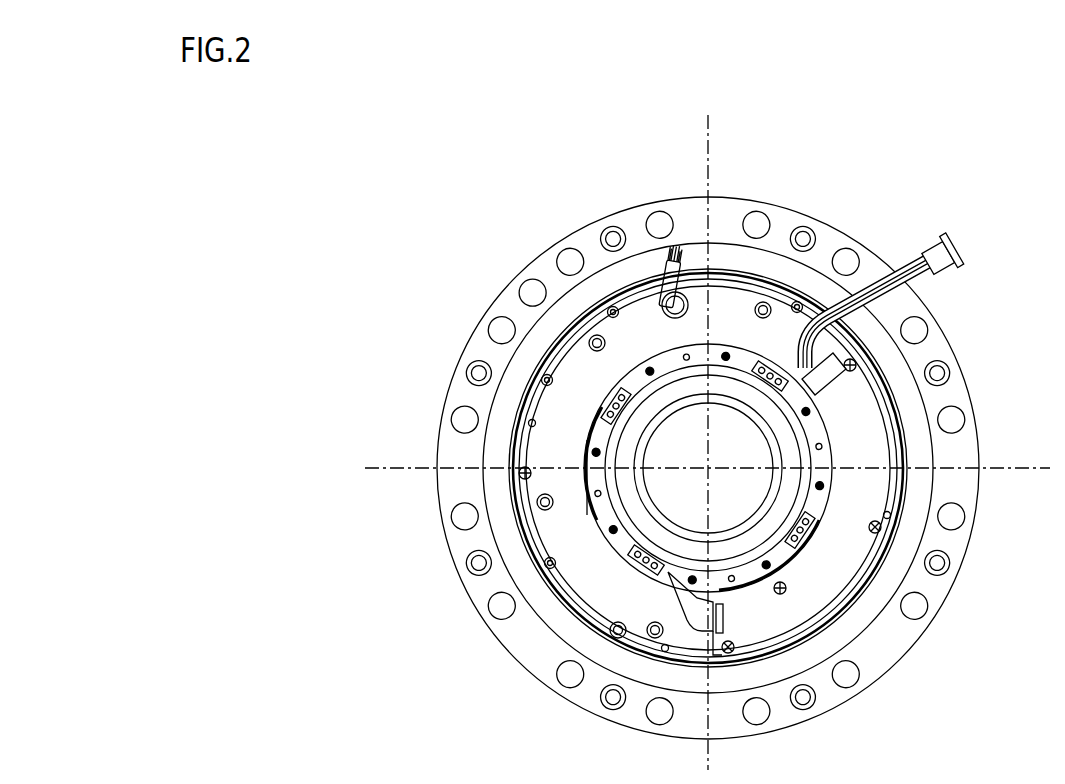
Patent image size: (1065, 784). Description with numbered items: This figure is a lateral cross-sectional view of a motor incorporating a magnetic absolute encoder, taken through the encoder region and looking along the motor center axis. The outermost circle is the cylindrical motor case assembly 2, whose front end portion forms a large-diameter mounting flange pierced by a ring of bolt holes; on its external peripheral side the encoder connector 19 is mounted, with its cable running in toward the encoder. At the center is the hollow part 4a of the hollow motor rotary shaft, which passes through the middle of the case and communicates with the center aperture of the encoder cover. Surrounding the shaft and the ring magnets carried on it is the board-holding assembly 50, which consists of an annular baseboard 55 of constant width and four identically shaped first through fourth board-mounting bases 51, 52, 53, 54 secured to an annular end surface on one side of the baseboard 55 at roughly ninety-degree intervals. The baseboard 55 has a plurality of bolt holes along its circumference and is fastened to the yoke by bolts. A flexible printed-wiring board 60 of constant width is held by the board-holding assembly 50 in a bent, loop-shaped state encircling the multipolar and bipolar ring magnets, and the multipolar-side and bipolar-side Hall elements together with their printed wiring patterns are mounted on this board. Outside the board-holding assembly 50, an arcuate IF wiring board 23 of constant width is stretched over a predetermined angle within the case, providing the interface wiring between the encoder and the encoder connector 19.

The motor case assembly 2 is at (437, 381).
The hollow part 4a is at (708, 468).
The encoder connector 19 is at (960, 242).
The IF wiring board 23 is at (870, 460).
The board-holding assembly 50 is at (601, 552).
The first board-mounting base 51 is at (776, 366).
The second board-mounting base 52 is at (810, 541).
The third board-mounting base 53 is at (638, 570).
The fourth board-mounting base 54 is at (610, 394).
The annular baseboard 55 is at (822, 432).
The flexible printed-wiring board 60 is at (586, 511).